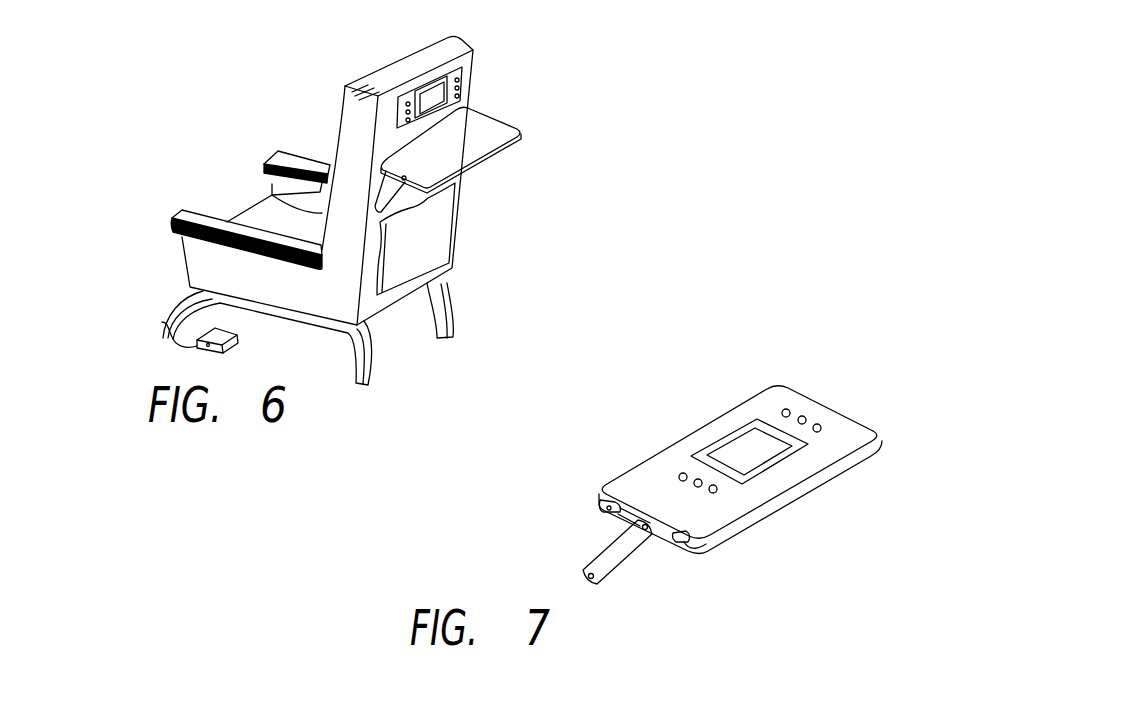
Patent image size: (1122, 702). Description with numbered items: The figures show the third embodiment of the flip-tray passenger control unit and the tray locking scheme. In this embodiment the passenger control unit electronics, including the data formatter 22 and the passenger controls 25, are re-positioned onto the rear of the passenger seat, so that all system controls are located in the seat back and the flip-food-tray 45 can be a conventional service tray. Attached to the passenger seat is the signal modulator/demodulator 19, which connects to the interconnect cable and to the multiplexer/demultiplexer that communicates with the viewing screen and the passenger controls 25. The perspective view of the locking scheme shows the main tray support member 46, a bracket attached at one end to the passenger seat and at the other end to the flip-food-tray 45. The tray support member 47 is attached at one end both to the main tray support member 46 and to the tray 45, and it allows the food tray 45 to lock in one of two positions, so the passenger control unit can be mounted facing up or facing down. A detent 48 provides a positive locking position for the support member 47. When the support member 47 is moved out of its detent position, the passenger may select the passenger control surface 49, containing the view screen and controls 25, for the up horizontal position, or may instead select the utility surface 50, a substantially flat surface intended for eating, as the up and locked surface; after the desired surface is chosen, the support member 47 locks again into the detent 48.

In FIG. 6, the signal modulator/demodulator 19 is at (162, 322).
In FIG. 6, the data formatter 22 is at (453, 76).
In FIG. 7, the data formatter 22 is at (728, 440).
In FIG. 6, the passenger controls 25 is at (459, 87).
In FIG. 7, the passenger controls 25 is at (821, 426).
In FIG. 7, the flip-food-tray 45 is at (696, 456).
In FIG. 7, the main tray support member 46 is at (612, 572).
In FIG. 7, the tray support member 47 is at (612, 520).
In FIG. 7, the detent 48 is at (686, 548).
In FIG. 7, the passenger control surface 49 is at (768, 402).
In FIG. 7, the utility surface 50 is at (820, 487).